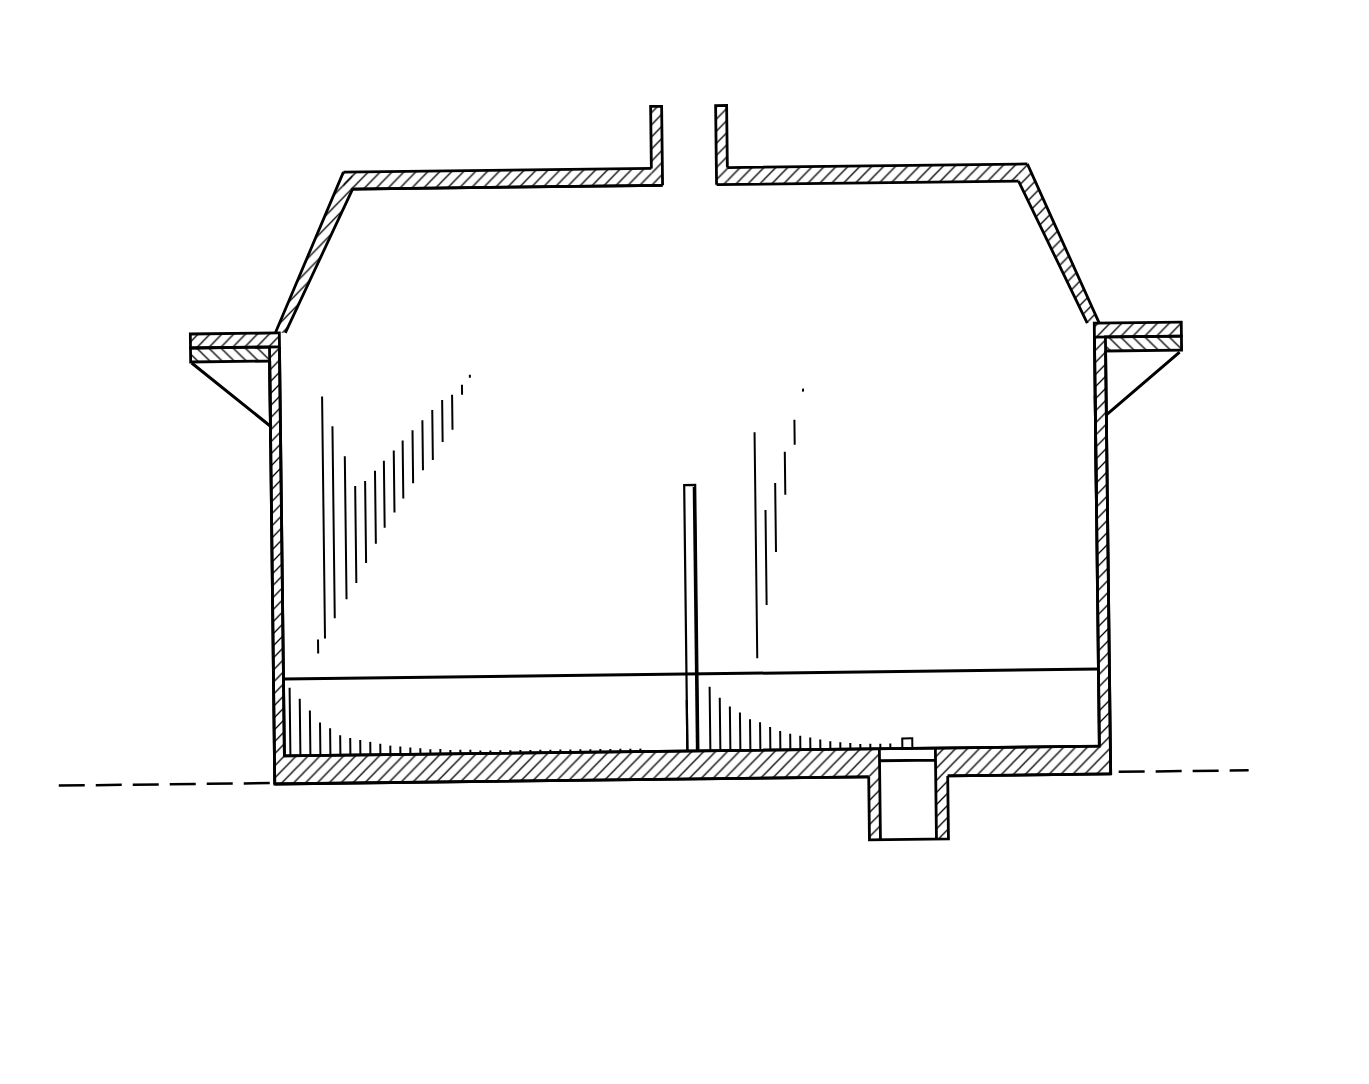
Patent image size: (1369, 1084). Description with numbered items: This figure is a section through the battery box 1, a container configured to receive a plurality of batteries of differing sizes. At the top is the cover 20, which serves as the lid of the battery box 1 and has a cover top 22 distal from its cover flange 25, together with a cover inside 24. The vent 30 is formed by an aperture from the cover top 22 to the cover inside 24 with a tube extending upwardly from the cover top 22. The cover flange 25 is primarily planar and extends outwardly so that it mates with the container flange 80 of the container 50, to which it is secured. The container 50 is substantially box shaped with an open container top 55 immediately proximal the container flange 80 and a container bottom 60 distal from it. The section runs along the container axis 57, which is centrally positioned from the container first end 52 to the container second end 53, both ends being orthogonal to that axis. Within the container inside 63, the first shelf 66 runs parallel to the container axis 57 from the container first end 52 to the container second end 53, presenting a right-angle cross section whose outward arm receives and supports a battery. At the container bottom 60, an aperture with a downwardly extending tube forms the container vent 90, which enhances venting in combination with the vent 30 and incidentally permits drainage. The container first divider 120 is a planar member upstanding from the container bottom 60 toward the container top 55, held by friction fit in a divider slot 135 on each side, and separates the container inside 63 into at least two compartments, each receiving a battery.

The battery box 1 is at (1254, 146).
The cover 20 is at (1050, 202).
The cover top 22 is at (927, 167).
The cover inside 24 is at (535, 189).
The cover flange 25 is at (234, 330).
The vent 30 is at (732, 128).
The container 50 is at (1108, 547).
The container first end 52 is at (1108, 500).
The container second end 53 is at (271, 595).
The container top 55 is at (270, 377).
The container axis 57 is at (148, 788).
The container bottom 60 is at (1090, 775).
The container inside 63 is at (1096, 453).
The first shelf 66 is at (395, 675).
The container flange 80 is at (207, 373).
The container vent 90 is at (945, 810).
The container first divider 120 is at (683, 514).
The divider slot 135 is at (683, 713).